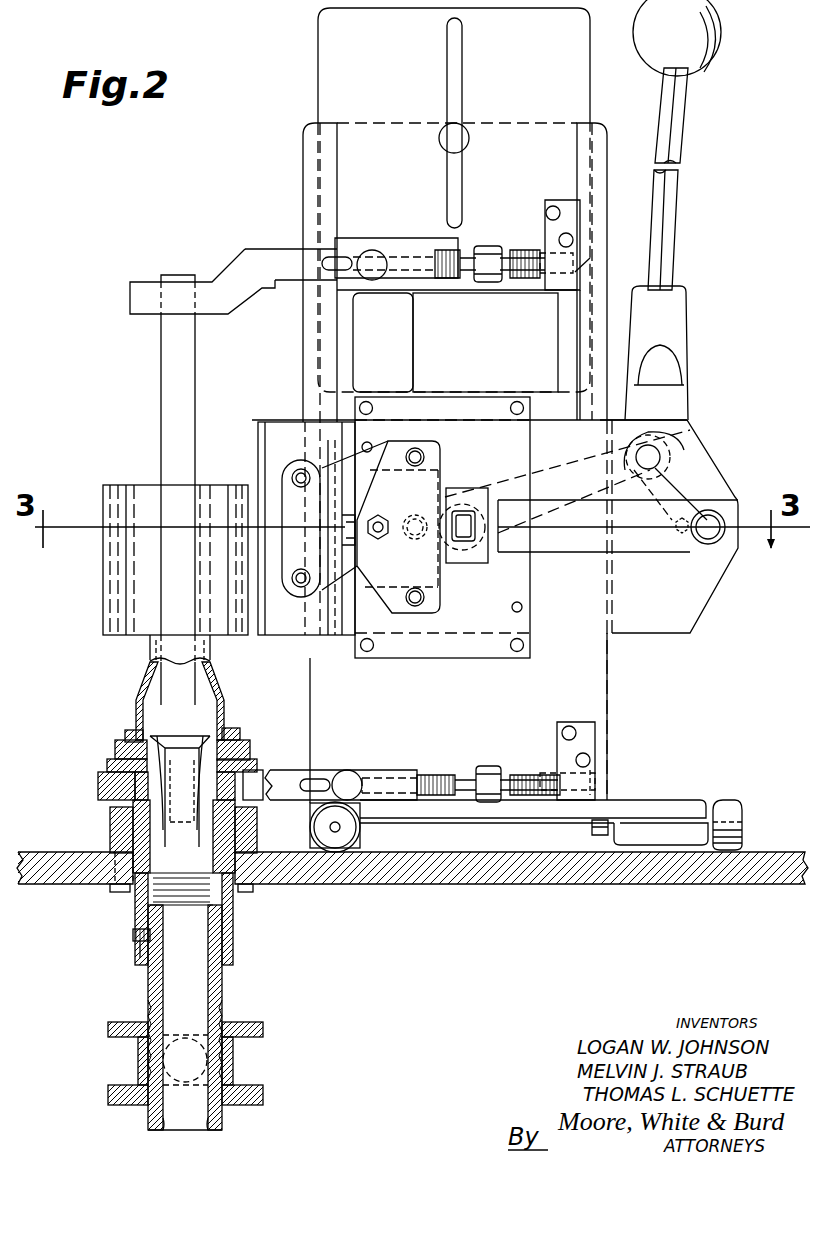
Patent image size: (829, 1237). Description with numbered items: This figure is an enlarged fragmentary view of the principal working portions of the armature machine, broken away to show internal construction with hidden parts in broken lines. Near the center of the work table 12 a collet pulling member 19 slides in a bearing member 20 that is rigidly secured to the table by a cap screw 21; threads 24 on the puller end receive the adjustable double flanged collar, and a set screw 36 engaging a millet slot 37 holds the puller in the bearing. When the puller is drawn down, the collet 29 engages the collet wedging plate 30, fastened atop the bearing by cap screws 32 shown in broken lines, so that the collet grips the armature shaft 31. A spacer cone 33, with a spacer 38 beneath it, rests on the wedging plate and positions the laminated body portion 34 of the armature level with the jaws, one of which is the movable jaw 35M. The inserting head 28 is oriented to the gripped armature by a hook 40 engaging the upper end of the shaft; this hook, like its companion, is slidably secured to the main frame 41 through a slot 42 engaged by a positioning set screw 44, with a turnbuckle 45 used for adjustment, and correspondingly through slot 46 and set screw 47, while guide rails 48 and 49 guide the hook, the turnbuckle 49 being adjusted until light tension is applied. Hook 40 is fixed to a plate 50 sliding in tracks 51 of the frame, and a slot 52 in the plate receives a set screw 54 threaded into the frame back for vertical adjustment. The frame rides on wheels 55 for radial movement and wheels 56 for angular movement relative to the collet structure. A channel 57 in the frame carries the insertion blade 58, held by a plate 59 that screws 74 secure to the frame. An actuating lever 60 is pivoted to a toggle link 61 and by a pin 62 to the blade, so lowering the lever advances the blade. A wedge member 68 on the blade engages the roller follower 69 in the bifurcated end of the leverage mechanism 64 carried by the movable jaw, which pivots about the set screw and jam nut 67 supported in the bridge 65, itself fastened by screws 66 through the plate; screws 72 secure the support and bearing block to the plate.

The work table 12 is at (505, 880).
The collet pulling member 19 is at (225, 978).
The bearing member 20 is at (235, 936).
The cap screw 21 is at (252, 886).
The threads 24 is at (225, 1008).
The inserting head 28 is at (292, 215).
The collet 29 is at (160, 809).
The collet wedging plate 30 is at (245, 744).
The armature shaft 31 is at (160, 357).
The cap screws 32 is at (113, 747).
The spacer cone 33 is at (222, 708).
The laminated body portion 34 is at (103, 586).
The movable jaw 35M is at (278, 645).
The set screw 36 is at (133, 938).
The millet slot 37 is at (138, 953).
The spacer 38 is at (240, 726).
The hook 40 is at (238, 253).
The main frame 41 is at (596, 690).
The slot 42 is at (322, 782).
The positioning set screw 44 is at (352, 776).
The turnbuckle 45 is at (488, 766).
The slot 46 is at (345, 263).
The set screw 47 is at (374, 262).
The guide rail 48 is at (408, 238).
The guide rail and turnbuckle 49 is at (490, 246).
The plate 50 is at (330, 74).
The tracks 51 is at (322, 153).
The slot 52 is at (456, 72).
The set screw 54 is at (462, 138).
The wheels 55 is at (342, 848).
The wheels 56 is at (730, 800).
The channel 57 is at (578, 612).
The insertion blade 58 is at (697, 606).
The plate 59 is at (522, 430).
The actuating lever 60 is at (672, 205).
The toggle link 61 is at (662, 460).
The pin 62 is at (714, 516).
The leverage mechanism 64 is at (462, 560).
The bridge 65 is at (438, 455).
The screws 66 is at (415, 448).
The set screw and jam nut 67 is at (381, 518).
The wedge member 68 is at (580, 548).
The roller follower 69 is at (478, 540).
The screws 72 is at (371, 444).
The screws 74 is at (374, 408).